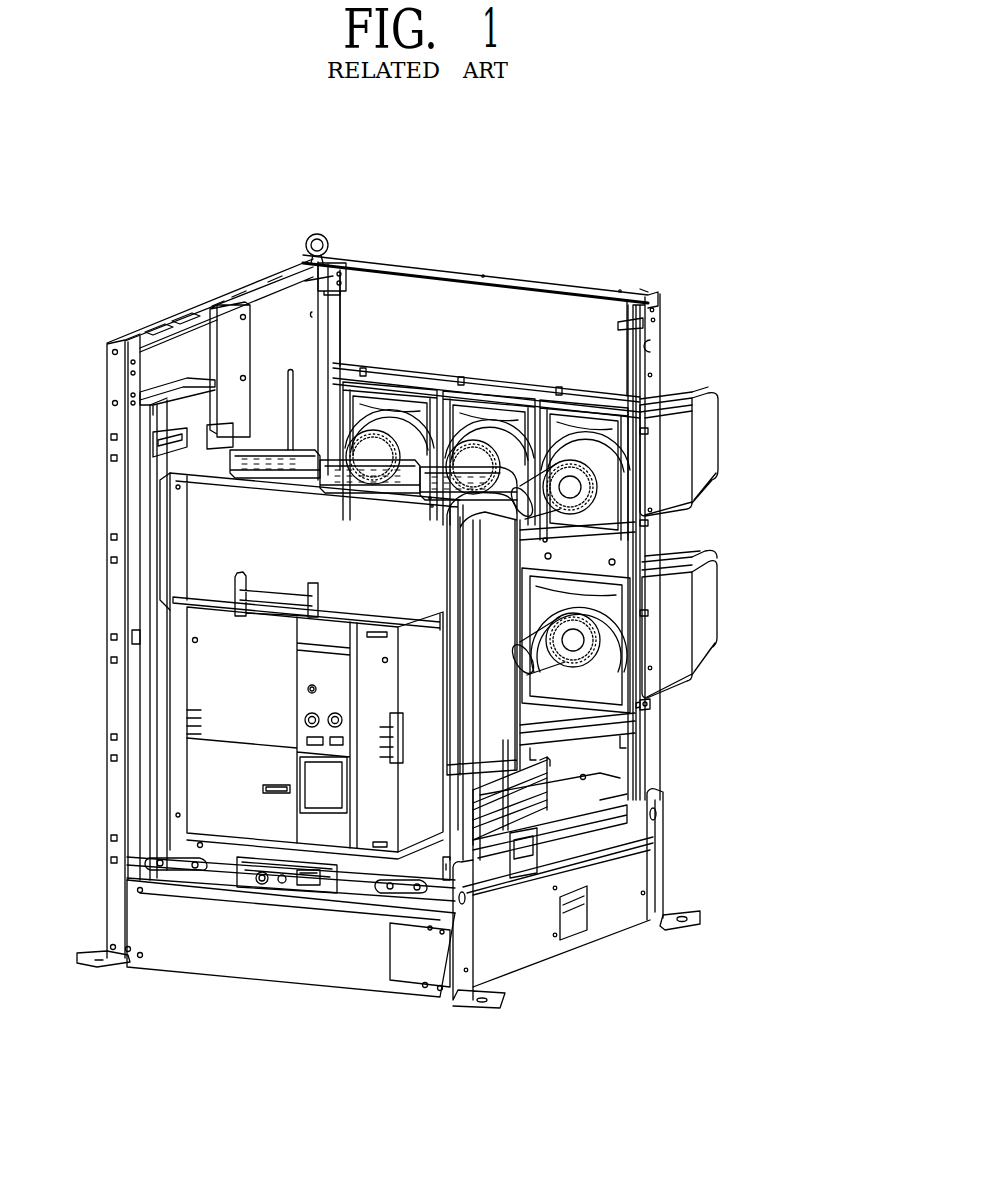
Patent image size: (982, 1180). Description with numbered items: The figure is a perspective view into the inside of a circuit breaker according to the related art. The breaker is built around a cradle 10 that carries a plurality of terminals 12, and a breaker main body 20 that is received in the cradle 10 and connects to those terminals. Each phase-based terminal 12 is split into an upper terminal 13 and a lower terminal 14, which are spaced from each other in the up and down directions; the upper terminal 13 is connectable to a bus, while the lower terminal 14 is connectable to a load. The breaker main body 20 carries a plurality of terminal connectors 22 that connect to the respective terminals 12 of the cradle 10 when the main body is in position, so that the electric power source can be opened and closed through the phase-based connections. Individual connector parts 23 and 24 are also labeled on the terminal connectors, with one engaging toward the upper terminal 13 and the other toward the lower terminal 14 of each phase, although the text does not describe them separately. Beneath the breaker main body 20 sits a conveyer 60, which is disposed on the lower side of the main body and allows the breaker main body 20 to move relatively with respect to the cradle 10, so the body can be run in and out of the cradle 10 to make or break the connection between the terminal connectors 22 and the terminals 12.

The cradle 10 is at (435, 622).
The terminals 12 is at (583, 567).
The upper terminal 13 is at (708, 437).
The lower terminal 14 is at (708, 616).
The breaker main body 20 is at (237, 533).
The terminal connectors 22 is at (665, 606).
The connector 23 is at (543, 505).
The fastening member 24 is at (626, 707).
The conveyer 60 is at (360, 886).